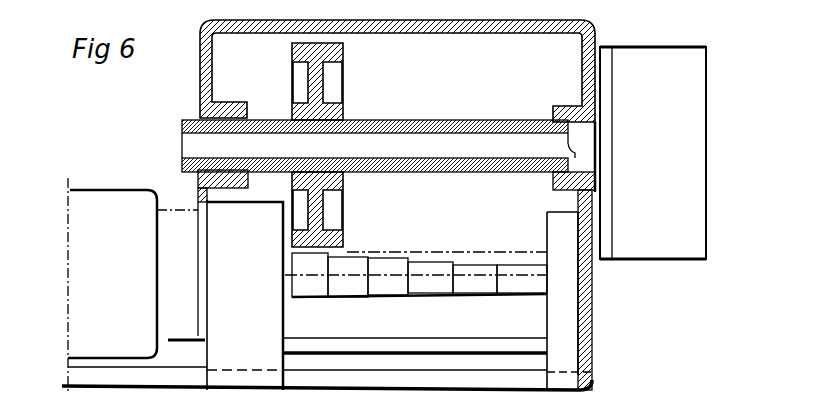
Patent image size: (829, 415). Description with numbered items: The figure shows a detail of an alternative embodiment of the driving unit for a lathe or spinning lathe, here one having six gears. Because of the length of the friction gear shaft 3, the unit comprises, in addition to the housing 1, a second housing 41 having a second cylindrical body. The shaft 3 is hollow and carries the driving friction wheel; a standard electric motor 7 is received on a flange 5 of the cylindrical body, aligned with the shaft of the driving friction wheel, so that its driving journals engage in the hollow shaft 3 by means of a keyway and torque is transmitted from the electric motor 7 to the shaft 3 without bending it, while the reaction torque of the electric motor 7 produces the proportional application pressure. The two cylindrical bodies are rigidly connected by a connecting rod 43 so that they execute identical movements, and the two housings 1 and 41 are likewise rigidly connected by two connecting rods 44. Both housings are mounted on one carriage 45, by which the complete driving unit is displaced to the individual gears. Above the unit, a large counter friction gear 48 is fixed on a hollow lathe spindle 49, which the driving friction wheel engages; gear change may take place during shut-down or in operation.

The housing 1 is at (201, 346).
The shaft 3 is at (353, 297).
The flange 5 is at (203, 237).
The electric motor 7 is at (110, 208).
The second housing 41 is at (563, 315).
The connecting rod 43 is at (462, 252).
The connecting rods 44 is at (425, 340).
The carriage 45 is at (532, 379).
The counter friction gear 48 is at (333, 80).
The hollow lathe spindle 49 is at (397, 123).